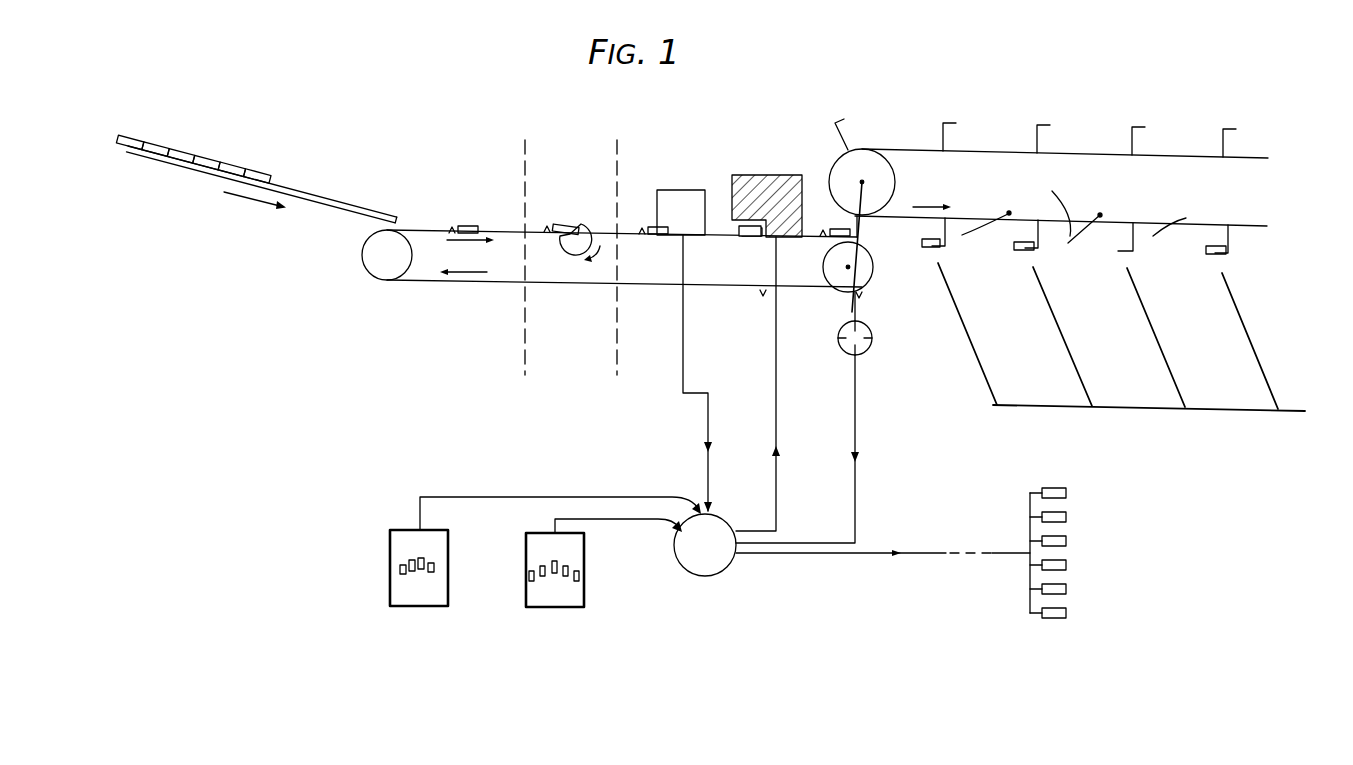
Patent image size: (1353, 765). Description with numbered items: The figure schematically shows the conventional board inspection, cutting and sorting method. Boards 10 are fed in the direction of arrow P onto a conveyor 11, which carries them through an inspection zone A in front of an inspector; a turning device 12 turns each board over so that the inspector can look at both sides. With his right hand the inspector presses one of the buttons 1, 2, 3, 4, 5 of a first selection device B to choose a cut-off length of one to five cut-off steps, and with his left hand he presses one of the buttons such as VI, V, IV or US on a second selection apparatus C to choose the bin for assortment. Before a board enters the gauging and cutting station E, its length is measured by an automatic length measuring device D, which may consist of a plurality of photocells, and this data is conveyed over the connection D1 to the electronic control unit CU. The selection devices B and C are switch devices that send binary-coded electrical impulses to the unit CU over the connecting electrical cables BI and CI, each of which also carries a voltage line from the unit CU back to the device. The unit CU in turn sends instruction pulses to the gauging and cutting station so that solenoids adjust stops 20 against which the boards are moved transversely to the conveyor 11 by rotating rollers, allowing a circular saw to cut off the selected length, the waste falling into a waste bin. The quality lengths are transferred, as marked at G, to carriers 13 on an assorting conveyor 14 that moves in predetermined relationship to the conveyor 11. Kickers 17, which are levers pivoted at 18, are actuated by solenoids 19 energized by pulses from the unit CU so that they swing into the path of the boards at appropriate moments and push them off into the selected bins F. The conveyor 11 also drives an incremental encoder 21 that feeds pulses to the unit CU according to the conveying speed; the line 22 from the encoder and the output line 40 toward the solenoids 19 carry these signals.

The boards 10 is at (282, 175).
The conveyor 11 is at (500, 230).
The turning device 12 is at (563, 246).
The carriers 13 is at (1032, 133).
The assorting conveyor 14 is at (910, 150).
The kickers 17 is at (1011, 213).
The pivot 18 is at (1100, 215).
The solenoids 19 is at (1068, 516).
The stops 20 is at (763, 188).
The incremental encoder 21 is at (838, 348).
The sensor signal line 22 is at (856, 434).
The output line 40 is at (866, 556).
The button 1 is at (528, 576).
The button 2 is at (538, 565).
The button 3 is at (553, 560).
The button 4 is at (566, 565).
The button 5 is at (580, 577).
The inspection zone A is at (571, 257).
The arrow P is at (255, 210).
The automatic length measuring device D is at (675, 194).
The connection D1 is at (690, 347).
The gauging and cutting station E is at (789, 183).
The transfer point G is at (853, 218).
The bins F is at (1040, 405).
The electronic control unit CU is at (705, 545).
The connecting electrical cable CI is at (523, 494).
The connecting electrical cable BI is at (628, 521).
The second selection apparatus C is at (419, 568).
The first selection device B is at (555, 570).